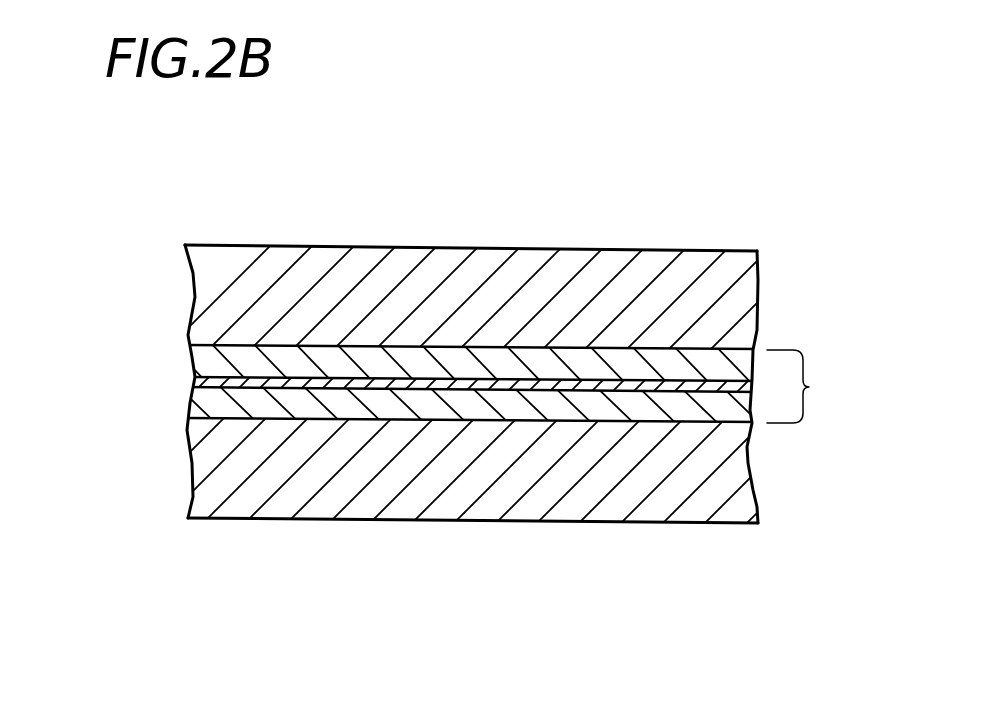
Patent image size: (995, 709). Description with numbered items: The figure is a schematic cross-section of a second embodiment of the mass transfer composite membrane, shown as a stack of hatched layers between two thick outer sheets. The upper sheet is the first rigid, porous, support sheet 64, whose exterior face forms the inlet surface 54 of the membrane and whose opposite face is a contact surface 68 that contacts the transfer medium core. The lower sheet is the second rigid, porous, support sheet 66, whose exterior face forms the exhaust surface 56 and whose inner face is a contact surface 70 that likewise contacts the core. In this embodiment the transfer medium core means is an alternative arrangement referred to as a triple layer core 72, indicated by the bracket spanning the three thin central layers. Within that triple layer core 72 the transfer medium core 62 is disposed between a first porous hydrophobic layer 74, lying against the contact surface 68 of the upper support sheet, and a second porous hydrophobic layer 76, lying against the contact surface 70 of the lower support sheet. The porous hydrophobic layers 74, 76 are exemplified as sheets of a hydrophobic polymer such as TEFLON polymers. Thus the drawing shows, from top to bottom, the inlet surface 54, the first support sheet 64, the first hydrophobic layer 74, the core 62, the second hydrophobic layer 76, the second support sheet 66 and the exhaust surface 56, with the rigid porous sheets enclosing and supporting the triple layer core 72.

The inlet surface 54 is at (600, 248).
The exhaust surface 56 is at (461, 523).
The transfer medium core 62 is at (200, 382).
The first rigid, porous, support sheet 64 is at (718, 291).
The second rigid, porous, support sheet 66 is at (728, 473).
The contact surface of the first support sheet 68 is at (585, 348).
The contact surface of the second support sheet 70 is at (643, 422).
The triple layer core 72 is at (810, 386).
The first porous hydrophobic layer 74 is at (208, 356).
The second porous hydrophobic layer 76 is at (218, 404).